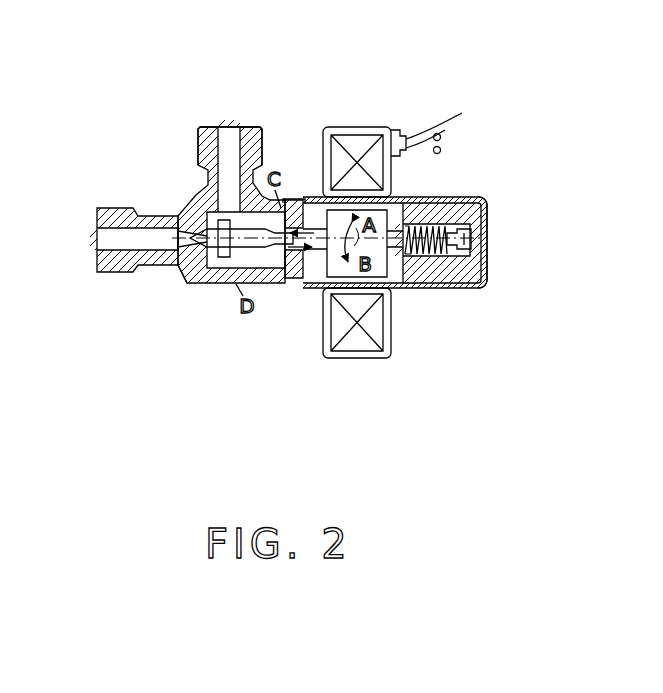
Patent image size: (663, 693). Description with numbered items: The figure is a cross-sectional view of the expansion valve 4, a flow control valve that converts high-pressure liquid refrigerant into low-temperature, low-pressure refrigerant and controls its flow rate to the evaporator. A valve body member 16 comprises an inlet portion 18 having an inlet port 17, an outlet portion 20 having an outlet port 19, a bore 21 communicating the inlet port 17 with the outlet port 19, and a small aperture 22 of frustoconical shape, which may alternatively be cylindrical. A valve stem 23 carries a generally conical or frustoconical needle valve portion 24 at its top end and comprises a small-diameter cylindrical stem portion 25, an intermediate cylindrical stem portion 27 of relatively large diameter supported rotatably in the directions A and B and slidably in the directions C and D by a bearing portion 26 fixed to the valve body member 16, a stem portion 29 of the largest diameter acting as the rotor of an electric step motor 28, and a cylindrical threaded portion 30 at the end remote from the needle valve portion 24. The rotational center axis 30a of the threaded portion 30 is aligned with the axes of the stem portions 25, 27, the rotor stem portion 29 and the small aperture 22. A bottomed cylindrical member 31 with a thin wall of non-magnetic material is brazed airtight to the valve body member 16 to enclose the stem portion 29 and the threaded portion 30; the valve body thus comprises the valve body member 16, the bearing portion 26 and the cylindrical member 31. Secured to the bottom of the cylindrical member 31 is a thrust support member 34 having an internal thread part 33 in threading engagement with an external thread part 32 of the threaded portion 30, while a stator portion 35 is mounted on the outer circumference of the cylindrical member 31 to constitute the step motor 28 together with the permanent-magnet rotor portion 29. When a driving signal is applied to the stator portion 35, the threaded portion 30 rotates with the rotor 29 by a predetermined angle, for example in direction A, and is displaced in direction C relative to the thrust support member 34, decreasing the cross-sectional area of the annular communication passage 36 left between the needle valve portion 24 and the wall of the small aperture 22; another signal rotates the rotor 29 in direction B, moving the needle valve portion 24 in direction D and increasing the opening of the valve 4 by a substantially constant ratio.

The expansion valve 4 is at (432, 64).
The valve body member 16 is at (192, 201).
The inlet port 17 is at (236, 129).
The inlet portion 18 is at (210, 130).
The outlet port 19 is at (97, 237).
The outlet portion 20 is at (117, 266).
The bore 21 is at (236, 286).
The small aperture 22 is at (184, 232).
The valve stem 23 is at (283, 279).
The needle valve portion 24 is at (224, 262).
The cylindrical stem portion 25 is at (236, 270).
The bearing portion 26 is at (298, 198).
The intermediate cylindrical stem portion 27 is at (300, 290).
The electric step motor 28 is at (387, 120).
The stem portion acting as rotor 29 is at (392, 290).
The cylindrical threaded portion 30 is at (462, 255).
The rotational center axis 30a is at (466, 231).
The bottomed cylindrical member 31 is at (500, 200).
The external thread part 32 is at (426, 262).
The internal thread part 33 is at (416, 232).
The thrust support member 34 is at (460, 152).
The stator portion 35 is at (345, 136).
The communication passage 36 is at (184, 274).